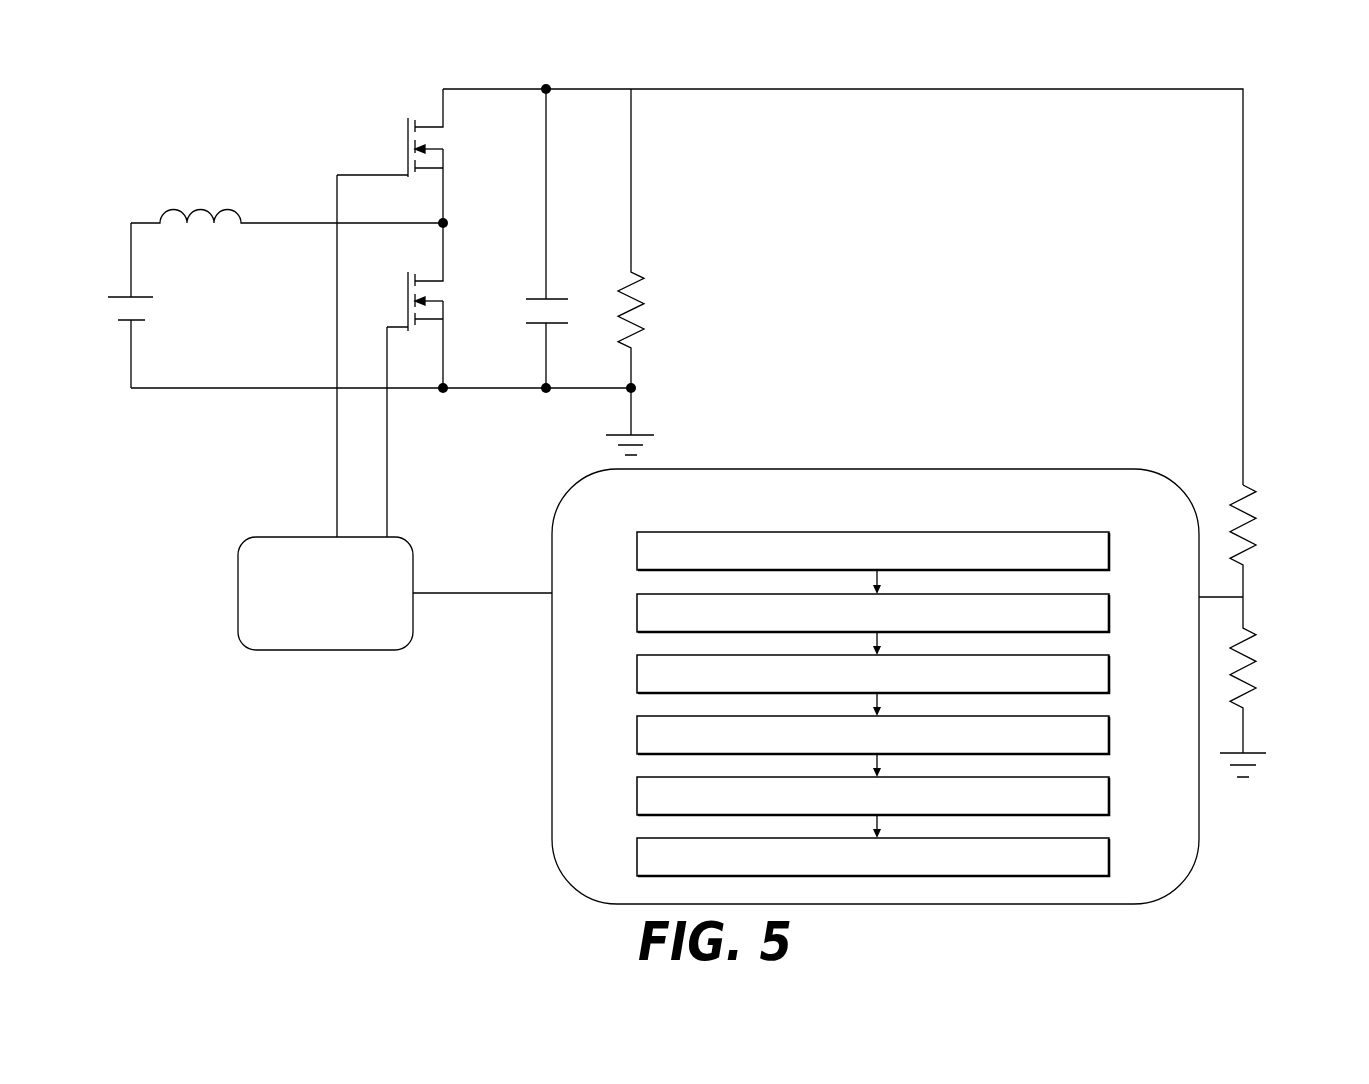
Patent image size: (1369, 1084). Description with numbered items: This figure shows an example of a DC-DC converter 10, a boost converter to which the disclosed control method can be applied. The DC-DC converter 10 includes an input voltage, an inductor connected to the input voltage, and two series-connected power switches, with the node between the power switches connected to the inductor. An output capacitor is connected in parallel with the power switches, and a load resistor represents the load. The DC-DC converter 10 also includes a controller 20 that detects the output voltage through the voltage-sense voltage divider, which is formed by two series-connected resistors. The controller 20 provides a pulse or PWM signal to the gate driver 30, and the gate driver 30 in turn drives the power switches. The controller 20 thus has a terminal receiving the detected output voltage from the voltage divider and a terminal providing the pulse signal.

The DC-DC converter 10 is at (198, 66).
The controller 20 is at (1037, 493).
The gate driver 30 is at (312, 631).